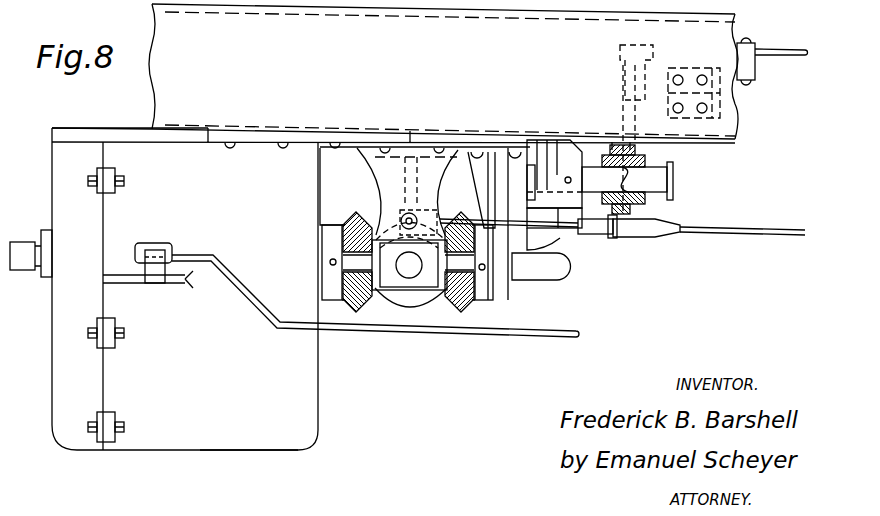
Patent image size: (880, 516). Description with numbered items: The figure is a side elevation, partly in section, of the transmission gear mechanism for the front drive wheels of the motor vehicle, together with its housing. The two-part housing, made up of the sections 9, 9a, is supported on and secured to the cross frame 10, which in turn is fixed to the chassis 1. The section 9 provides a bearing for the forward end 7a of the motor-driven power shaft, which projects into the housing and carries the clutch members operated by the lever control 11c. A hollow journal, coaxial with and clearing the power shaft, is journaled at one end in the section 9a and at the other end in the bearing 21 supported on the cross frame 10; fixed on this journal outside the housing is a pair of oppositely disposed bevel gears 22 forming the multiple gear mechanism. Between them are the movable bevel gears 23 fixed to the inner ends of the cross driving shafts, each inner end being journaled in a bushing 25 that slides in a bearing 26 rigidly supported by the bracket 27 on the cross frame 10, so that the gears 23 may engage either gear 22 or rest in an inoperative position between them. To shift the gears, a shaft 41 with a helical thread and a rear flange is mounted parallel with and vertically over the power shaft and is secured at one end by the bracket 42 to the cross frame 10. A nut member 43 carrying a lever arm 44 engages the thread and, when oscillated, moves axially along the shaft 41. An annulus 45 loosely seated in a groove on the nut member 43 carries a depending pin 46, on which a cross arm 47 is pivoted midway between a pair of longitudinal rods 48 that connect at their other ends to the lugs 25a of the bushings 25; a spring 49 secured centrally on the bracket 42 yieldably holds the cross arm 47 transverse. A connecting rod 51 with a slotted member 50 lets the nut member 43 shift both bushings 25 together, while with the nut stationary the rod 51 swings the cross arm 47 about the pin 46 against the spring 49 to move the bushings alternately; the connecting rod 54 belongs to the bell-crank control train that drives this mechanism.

The chassis 1 is at (163, 96).
The cross frame 10 is at (92, 128).
The housing section 9 is at (68, 446).
The housing section 9a is at (228, 452).
The power shaft forward end 7a is at (25, 272).
The lever control 11c is at (509, 338).
The bracket 27 is at (438, 192).
The lug 25a is at (400, 216).
The bevel gears 22 is at (358, 313).
The movable bevel gears 23 is at (410, 308).
The bushing 25 is at (382, 276).
The bearing 26 is at (443, 272).
The bearing 21 is at (512, 296).
The bracket 42 is at (567, 157).
The lever arm 44 is at (623, 97).
The annulus 45 is at (617, 143).
The nut member 43 is at (648, 157).
The shaft 41 is at (673, 165).
The cross arm 47 is at (647, 209).
The rods 48 is at (540, 232).
The spring 49 is at (600, 236).
The pin 46 is at (622, 238).
The slotted member 50 is at (672, 237).
The connecting rod 51 is at (748, 236).
The connecting rod 54 is at (766, 48).